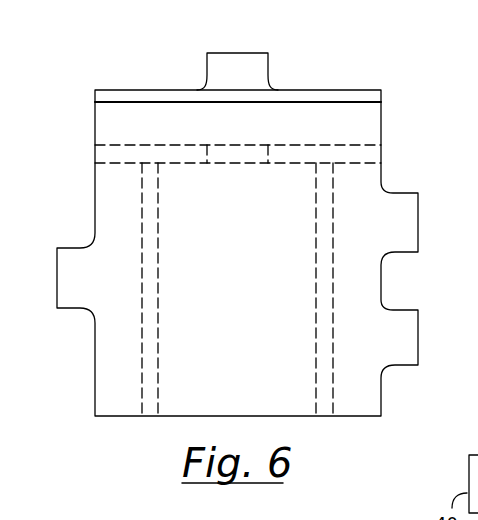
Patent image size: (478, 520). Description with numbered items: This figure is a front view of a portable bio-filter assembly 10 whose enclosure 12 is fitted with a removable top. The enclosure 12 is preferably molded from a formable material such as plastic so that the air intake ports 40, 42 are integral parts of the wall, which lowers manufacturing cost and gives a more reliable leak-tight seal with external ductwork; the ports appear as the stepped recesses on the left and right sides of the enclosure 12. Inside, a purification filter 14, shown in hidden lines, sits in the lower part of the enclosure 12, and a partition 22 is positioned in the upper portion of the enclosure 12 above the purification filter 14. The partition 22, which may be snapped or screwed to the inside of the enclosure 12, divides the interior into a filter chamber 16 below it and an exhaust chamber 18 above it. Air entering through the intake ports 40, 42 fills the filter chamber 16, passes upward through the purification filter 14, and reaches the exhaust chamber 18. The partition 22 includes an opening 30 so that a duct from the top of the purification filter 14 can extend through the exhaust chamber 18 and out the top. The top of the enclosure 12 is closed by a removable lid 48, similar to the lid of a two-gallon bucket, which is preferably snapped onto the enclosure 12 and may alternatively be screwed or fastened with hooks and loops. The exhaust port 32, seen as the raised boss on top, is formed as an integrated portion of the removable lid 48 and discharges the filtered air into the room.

The bio-filter assembly 10 is at (115, 75).
The enclosure 12 is at (95, 389).
The purification filter 14 is at (335, 212).
The filter chamber 16 is at (108, 201).
The exhaust chamber 18 is at (372, 122).
The partition 22 is at (348, 145).
The opening 30 is at (230, 154).
The exhaust port 32 is at (257, 63).
The air intake port 40 is at (57, 298).
The air intake port 42 is at (418, 220).
The removable lid 48 is at (352, 88).